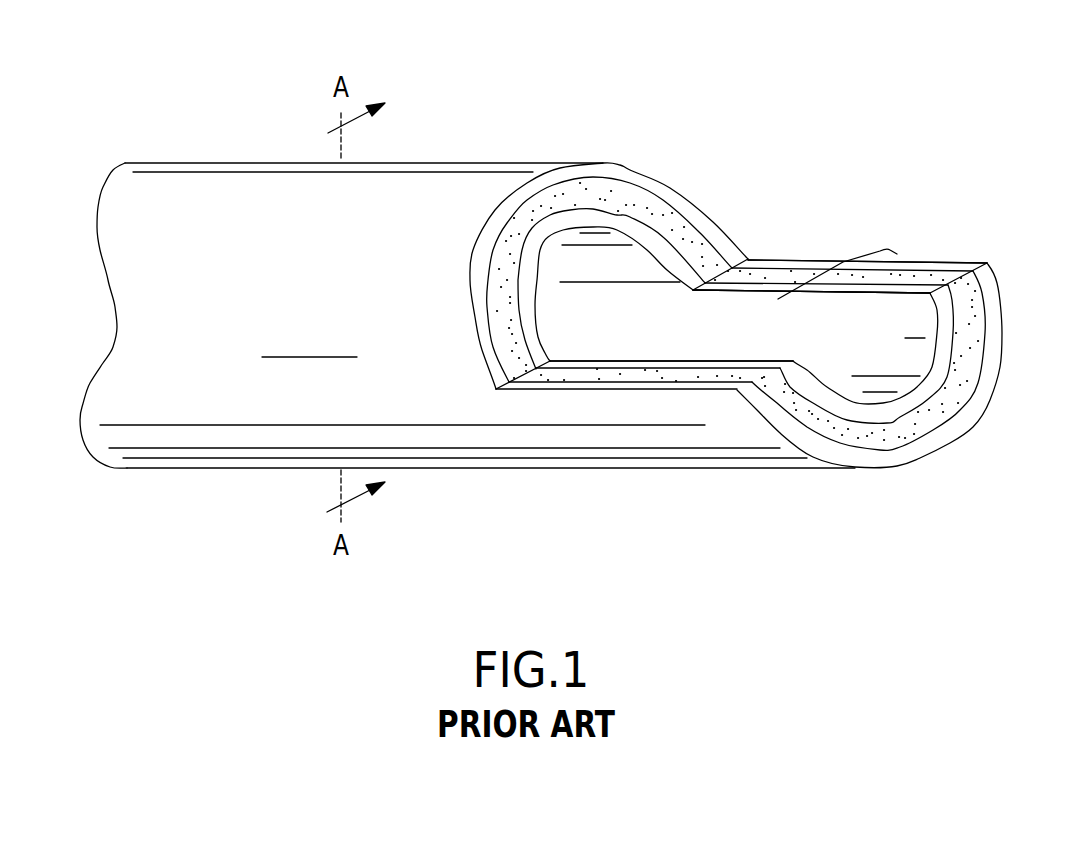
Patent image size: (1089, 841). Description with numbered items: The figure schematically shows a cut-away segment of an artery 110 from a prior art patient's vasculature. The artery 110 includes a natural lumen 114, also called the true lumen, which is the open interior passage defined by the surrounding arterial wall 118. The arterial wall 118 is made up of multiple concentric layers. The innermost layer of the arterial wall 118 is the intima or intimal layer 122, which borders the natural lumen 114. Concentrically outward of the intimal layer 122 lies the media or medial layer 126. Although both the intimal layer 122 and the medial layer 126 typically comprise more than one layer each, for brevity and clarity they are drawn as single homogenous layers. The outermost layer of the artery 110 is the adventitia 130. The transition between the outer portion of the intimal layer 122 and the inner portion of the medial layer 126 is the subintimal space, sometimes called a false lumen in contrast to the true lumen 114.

The artery 110 is at (529, 100).
The natural lumen 114 is at (655, 245).
The arterial wall 118 is at (848, 224).
The intimal layer 122 is at (945, 315).
The medial layer 126 is at (965, 375).
The adventitia 130 is at (910, 453).